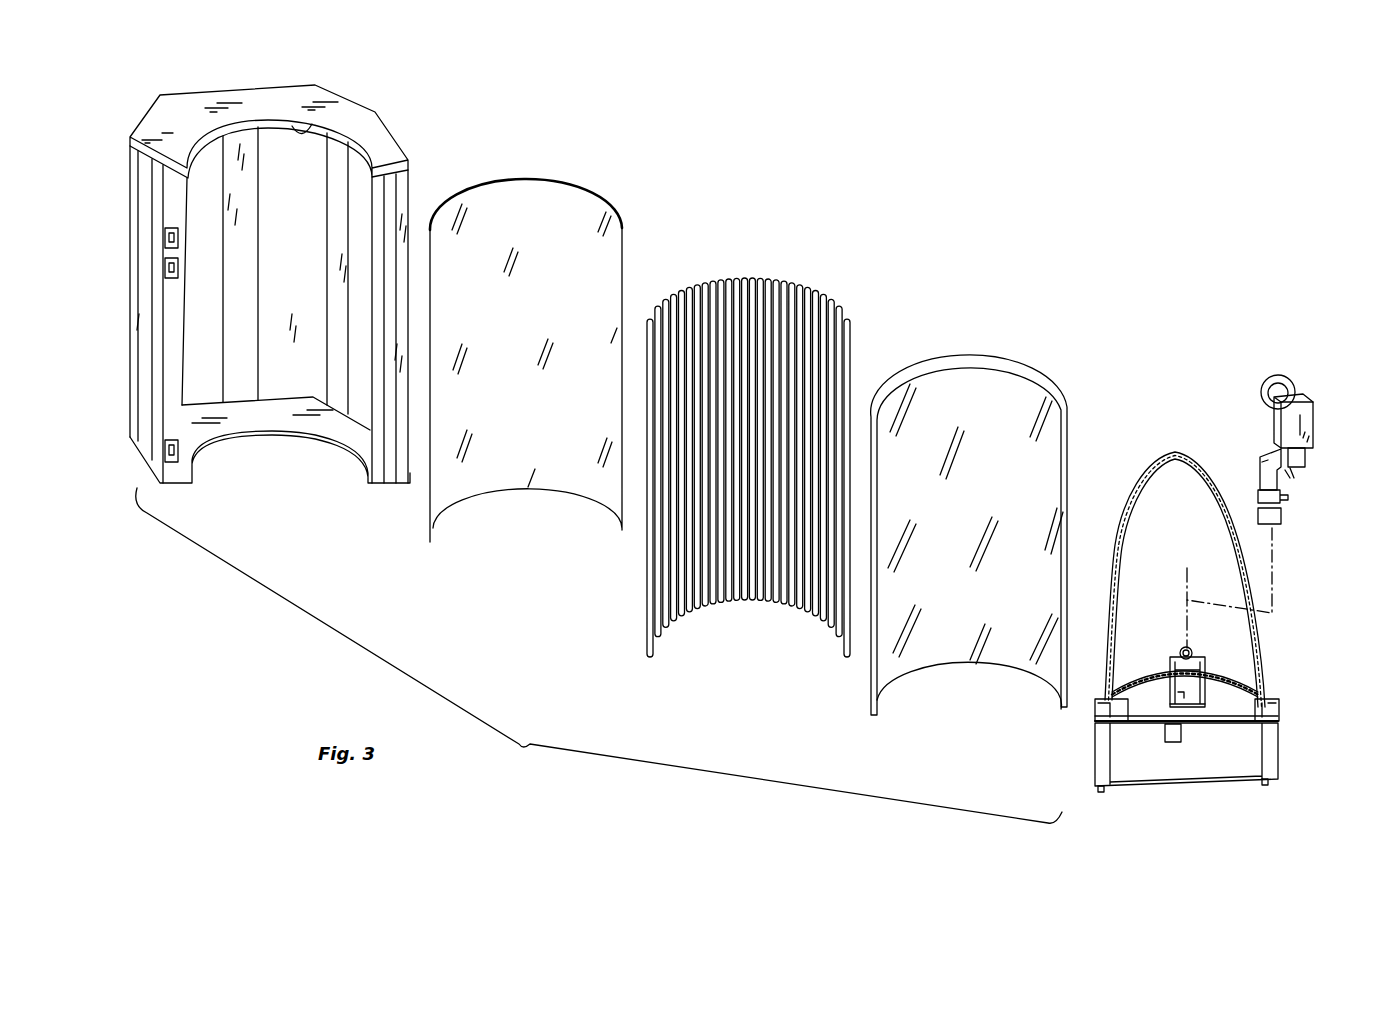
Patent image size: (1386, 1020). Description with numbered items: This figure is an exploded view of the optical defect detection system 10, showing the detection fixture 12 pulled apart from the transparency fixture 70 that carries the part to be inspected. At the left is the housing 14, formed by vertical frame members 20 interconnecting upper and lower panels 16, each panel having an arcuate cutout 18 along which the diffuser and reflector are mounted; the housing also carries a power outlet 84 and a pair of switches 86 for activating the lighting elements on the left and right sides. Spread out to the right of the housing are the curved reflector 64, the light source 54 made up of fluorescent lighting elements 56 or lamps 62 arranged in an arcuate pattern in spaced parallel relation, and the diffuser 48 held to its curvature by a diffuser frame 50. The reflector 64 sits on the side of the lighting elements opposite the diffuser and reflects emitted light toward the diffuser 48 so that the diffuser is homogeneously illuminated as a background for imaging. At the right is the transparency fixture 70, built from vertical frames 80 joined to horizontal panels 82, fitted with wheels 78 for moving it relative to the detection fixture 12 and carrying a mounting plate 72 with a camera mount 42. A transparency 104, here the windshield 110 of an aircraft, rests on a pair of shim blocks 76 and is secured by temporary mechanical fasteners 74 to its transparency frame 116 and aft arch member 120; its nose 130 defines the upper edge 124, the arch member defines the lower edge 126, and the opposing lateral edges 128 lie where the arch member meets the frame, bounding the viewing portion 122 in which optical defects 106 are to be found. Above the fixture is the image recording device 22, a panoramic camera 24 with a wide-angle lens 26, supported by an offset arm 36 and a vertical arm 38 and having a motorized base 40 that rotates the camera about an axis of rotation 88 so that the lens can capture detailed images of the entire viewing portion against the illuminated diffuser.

The optical defect detection system 10 is at (960, 180).
The detection fixture 12 is at (599, 655).
The housing 14 is at (285, 290).
The panel 16 is at (281, 273).
The cutouts 18 is at (303, 134).
The vertical frame members 20 is at (170, 328).
The image recording device 22 is at (1286, 430).
The panoramic camera 24 is at (1286, 430).
The wide-angle lens 26 is at (1278, 376).
The offset arm 36 is at (1268, 455).
The vertical arm 38 is at (1260, 470).
The base 40 is at (1205, 660).
The camera mount 42 is at (1162, 737).
The diffuser 48 is at (972, 526).
The diffuser frame 50 is at (998, 363).
The light source 54 is at (764, 429).
The fluorescent lighting elements 56 is at (764, 449).
The fluorescent lamps 62 is at (825, 298).
The reflector 64 is at (540, 178).
The transparency fixture 70 is at (1166, 721).
The mounting plate 72 is at (1224, 708).
The temporary mechanical fasteners 74 is at (1162, 728).
The shim blocks 76 is at (1096, 712).
The wheels 78 is at (1098, 793).
The vertical frames 80 is at (1108, 787).
The horizontal panels 82 is at (1180, 777).
The power outlets 84 is at (180, 455).
The switches 86 is at (178, 238).
The axis of rotation 88 is at (1187, 583).
The transparency 104 is at (1185, 579).
The optical defects 106 is at (1224, 533).
The windshield 110 is at (1203, 496).
The transparency frame 116 is at (1263, 636).
The aft arch member 120 is at (1128, 685).
The viewing portion 122 is at (1198, 557).
The upper edge 124 is at (1218, 556).
The lower edge 126 is at (1157, 675).
The lateral edges 128 is at (1105, 686).
The nose 130 is at (1218, 556).